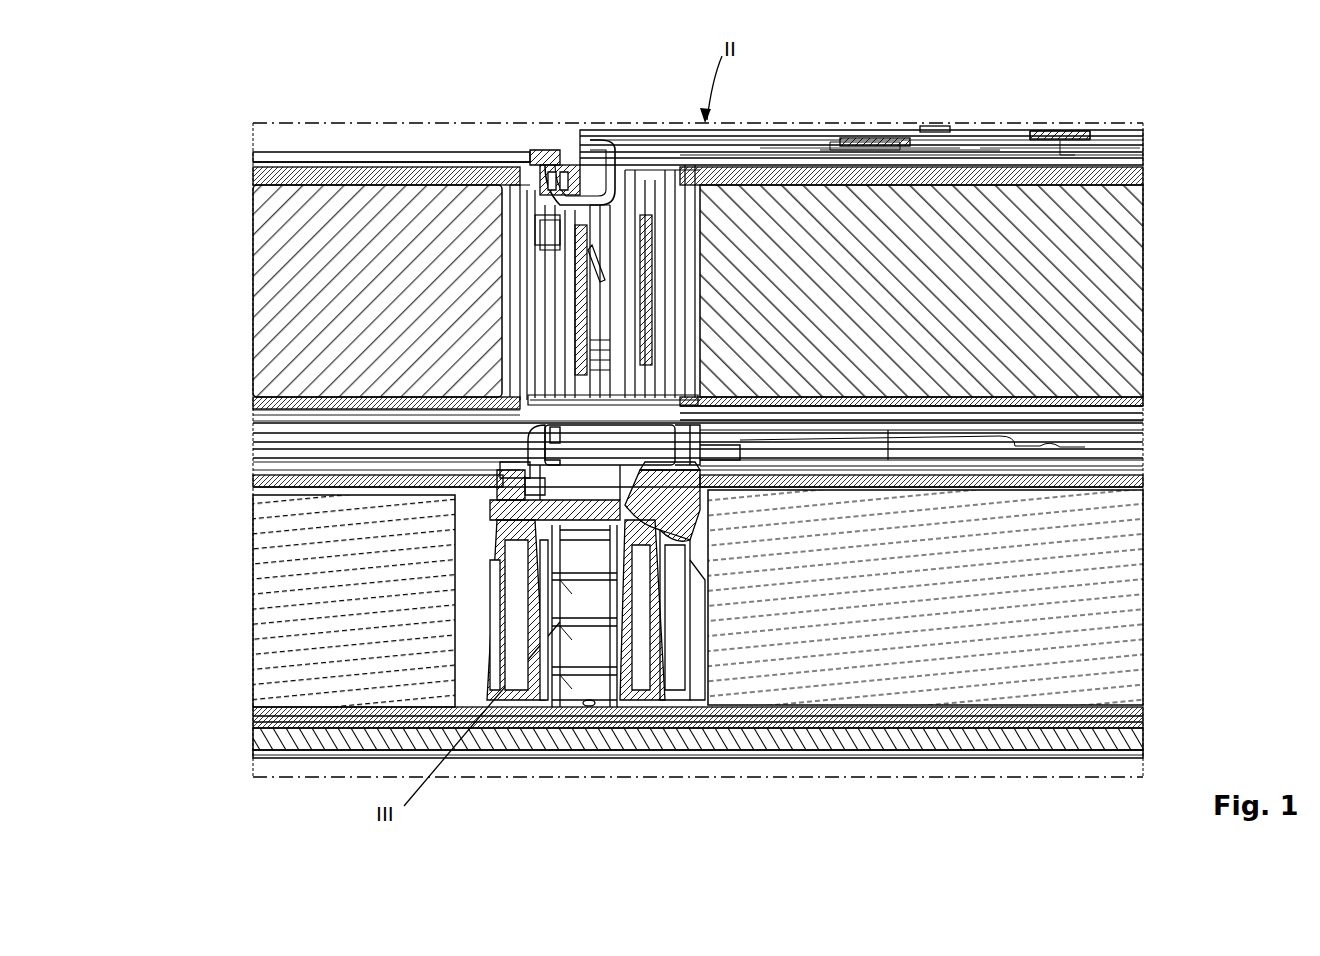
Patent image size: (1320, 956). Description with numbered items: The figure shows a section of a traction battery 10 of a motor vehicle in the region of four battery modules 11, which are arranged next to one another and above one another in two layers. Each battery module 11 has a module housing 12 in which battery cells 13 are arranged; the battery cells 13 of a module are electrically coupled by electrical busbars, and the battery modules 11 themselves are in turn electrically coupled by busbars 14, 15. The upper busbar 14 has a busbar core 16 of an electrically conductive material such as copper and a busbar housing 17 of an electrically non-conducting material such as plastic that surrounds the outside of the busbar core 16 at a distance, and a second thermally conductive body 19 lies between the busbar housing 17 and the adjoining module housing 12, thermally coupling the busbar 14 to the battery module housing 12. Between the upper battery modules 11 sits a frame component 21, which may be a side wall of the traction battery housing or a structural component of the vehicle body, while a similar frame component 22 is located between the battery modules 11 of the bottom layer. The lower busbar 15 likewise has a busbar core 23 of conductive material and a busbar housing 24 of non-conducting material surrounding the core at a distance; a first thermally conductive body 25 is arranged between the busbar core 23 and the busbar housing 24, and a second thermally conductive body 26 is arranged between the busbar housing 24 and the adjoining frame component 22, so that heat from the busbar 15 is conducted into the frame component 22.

The traction battery 10 is at (200, 710).
The battery module 11 is at (345, 145).
The module housing 12 is at (308, 168).
The battery cell 13 is at (352, 305).
The busbar 14 is at (770, 140).
The busbar 15 is at (616, 535).
The busbar core 16 is at (862, 142).
The busbar housing 17 is at (1052, 150).
The second thermally conductive body 19 is at (800, 156).
The frame component 21 is at (565, 160).
The frame component 22 is at (565, 610).
The busbar core 23 is at (505, 493).
The busbar housing 24 is at (660, 512).
The first thermally conductive body 25 is at (490, 520).
The second thermally conductive body 26 is at (655, 560).